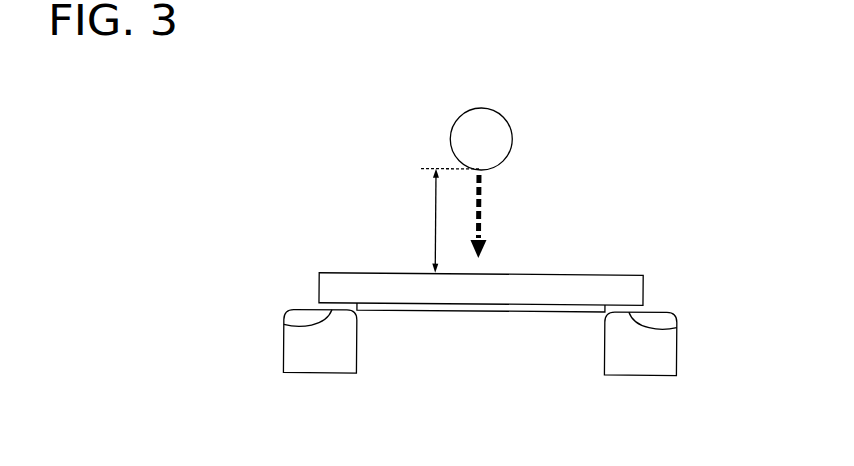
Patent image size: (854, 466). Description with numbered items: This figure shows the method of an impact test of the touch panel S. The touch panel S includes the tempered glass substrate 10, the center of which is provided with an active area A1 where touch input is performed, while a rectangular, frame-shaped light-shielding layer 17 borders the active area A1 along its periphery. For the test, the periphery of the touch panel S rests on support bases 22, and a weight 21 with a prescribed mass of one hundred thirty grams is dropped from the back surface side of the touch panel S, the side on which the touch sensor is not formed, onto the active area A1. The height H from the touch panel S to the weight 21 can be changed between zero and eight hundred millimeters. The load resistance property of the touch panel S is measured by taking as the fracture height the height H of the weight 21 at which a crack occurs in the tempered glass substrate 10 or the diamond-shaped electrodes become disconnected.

The weight 21 is at (503, 138).
The height H is at (448, 221).
The touch panel S is at (641, 258).
The tempered glass substrate 10 is at (635, 292).
The support bases 22 is at (307, 363).
The light-shielding layer 17 is at (300, 323).
The active area A1 is at (478, 324).